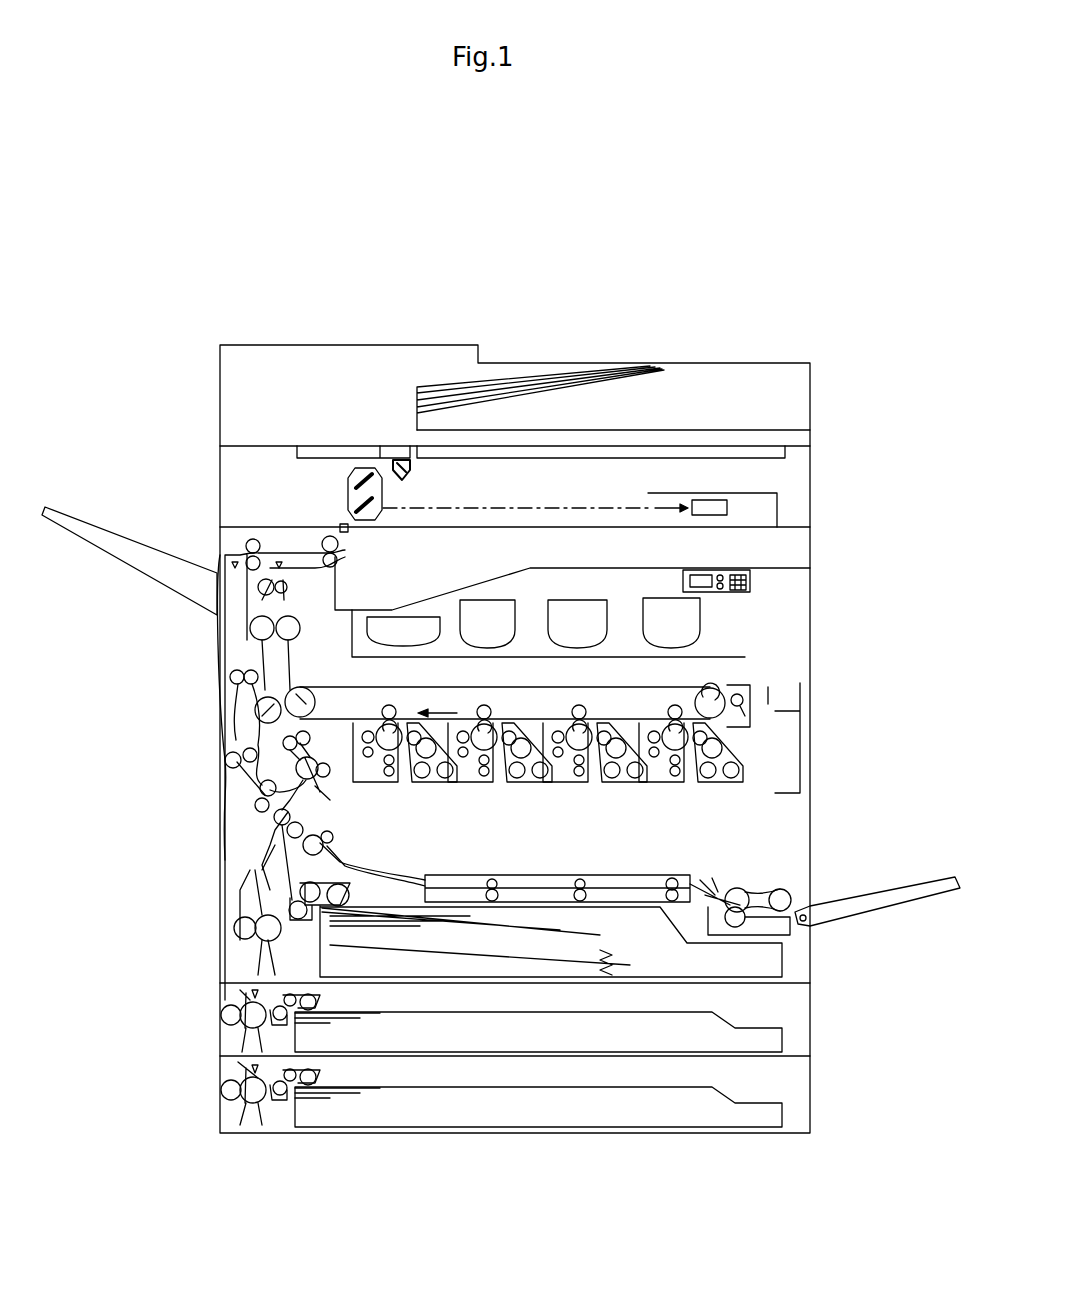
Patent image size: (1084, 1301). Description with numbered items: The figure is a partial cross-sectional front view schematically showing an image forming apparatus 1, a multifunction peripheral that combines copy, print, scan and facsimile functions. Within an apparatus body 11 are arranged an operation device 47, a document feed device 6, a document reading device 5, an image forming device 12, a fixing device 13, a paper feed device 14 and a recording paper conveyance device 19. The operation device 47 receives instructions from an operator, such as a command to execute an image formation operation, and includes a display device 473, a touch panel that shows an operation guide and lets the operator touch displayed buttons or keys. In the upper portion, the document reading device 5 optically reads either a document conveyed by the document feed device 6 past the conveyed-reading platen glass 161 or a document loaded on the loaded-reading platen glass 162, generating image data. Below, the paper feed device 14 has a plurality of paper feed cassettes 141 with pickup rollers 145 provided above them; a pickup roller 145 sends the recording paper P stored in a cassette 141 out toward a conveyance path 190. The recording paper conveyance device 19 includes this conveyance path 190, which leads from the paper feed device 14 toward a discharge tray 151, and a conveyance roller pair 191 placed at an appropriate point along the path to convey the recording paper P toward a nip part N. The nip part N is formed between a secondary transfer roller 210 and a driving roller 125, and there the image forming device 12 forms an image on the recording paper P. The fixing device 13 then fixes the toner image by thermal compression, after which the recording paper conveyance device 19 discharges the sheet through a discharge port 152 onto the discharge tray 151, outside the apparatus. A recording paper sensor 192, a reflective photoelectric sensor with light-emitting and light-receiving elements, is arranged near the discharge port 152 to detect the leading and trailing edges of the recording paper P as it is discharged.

The image forming apparatus 1 is at (893, 425).
The document reading device 5 is at (200, 478).
The document feed device 6 is at (640, 349).
The apparatus body 11 is at (814, 591).
The image forming device 12 is at (765, 725).
The fixing device 13 is at (240, 630).
The paper feed device 14 is at (788, 1012).
The recording paper conveyance device 19 is at (358, 797).
The operation device 47 is at (752, 582).
The driving roller 125 is at (296, 693).
The paper feed cassette 141 is at (792, 957).
The pickup roller 145 is at (268, 1075).
The discharge tray 151 is at (356, 606).
The discharge port 152 is at (340, 550).
The conveyed-reading platen glass 161 is at (332, 452).
The loaded-reading platen glass 162 is at (665, 456).
The conveyance path 190 is at (233, 700).
The conveyance roller pair 191 is at (325, 778).
The recording paper sensor 192 is at (340, 526).
The secondary transfer roller 210 is at (222, 745).
The display device 473 is at (698, 577).
The nip part N is at (273, 693).
The recording paper P is at (600, 933).